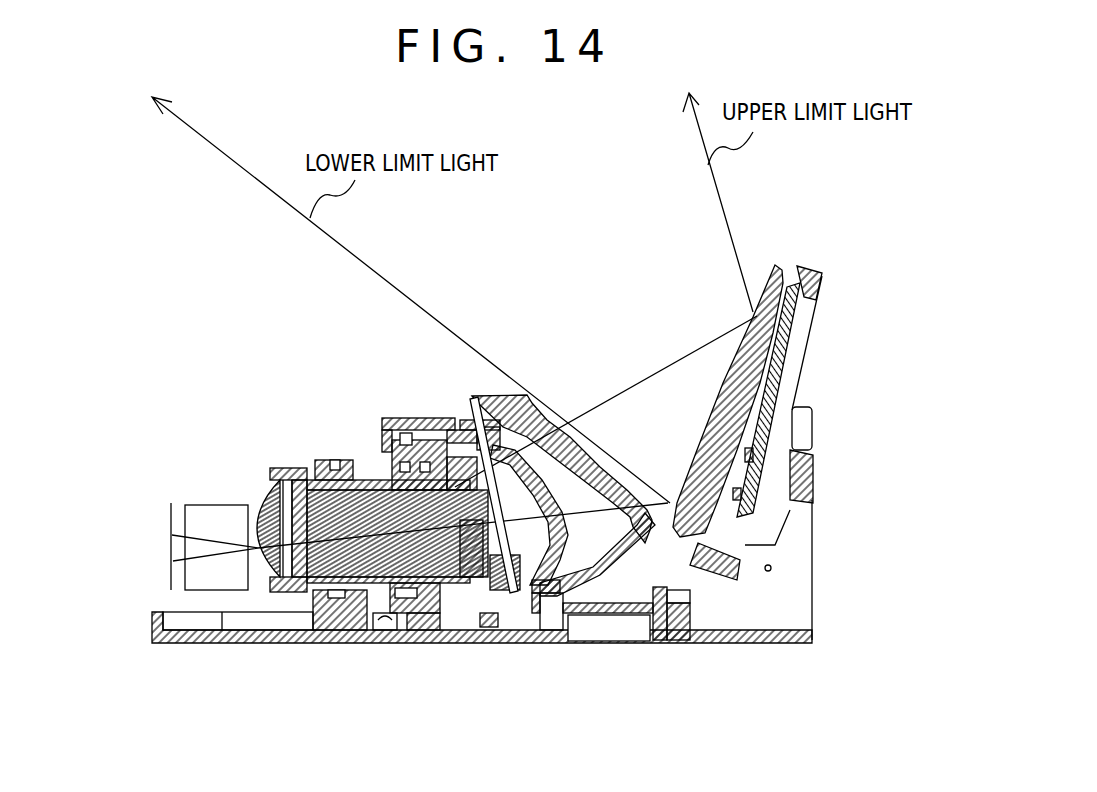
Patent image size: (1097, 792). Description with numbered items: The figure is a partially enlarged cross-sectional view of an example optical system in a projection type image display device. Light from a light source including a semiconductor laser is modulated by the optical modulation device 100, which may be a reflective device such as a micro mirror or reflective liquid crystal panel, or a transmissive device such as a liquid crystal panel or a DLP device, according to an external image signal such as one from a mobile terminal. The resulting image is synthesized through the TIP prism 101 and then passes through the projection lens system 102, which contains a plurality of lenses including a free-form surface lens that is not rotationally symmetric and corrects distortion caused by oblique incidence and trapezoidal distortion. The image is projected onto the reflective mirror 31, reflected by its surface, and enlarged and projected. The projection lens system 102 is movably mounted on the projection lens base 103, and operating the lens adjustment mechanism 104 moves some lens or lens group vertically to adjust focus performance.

The reflective mirror 31 is at (730, 393).
The optical modulation device 100 is at (168, 525).
The TIP prism 101 is at (213, 512).
The projection lens system 102 is at (500, 396).
The projection lens base 103 is at (388, 645).
The lens adjustment mechanism 104 is at (322, 457).